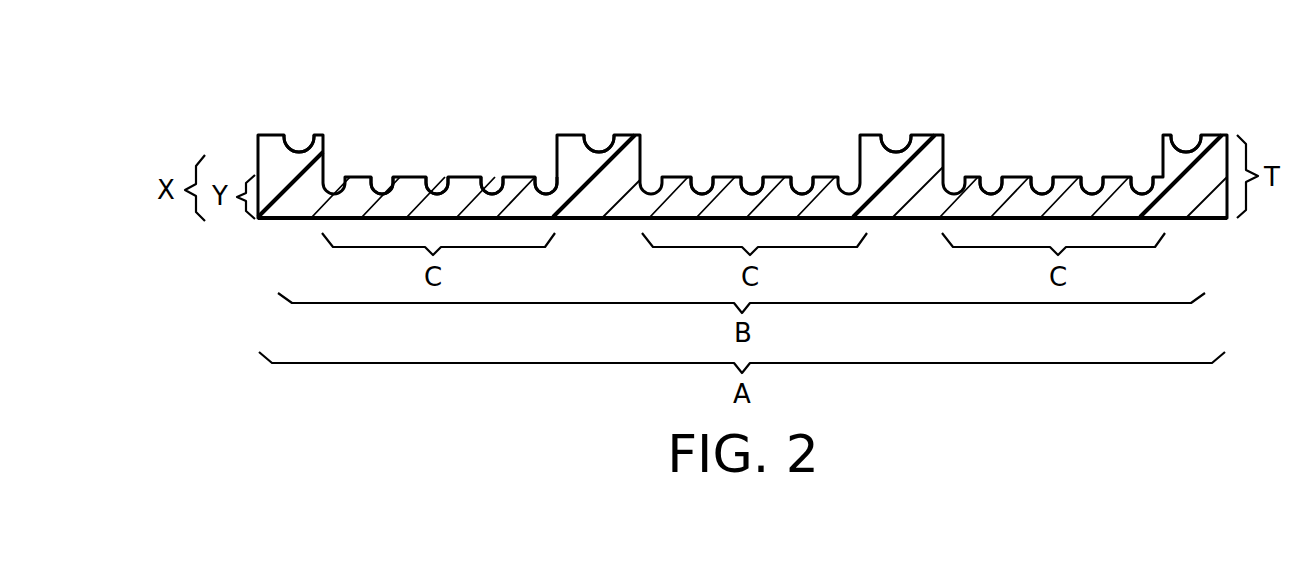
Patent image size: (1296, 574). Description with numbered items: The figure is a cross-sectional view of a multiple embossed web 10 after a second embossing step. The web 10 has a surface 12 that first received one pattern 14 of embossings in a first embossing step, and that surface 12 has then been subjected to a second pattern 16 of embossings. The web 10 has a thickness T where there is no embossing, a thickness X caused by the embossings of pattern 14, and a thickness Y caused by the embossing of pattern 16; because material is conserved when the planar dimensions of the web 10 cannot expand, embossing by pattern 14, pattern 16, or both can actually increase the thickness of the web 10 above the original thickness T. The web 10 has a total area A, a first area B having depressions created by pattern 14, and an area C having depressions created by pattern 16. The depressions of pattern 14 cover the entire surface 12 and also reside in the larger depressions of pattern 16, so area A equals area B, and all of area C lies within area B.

The web 10 is at (1100, 55).
The surface 12 is at (575, 132).
The pattern of embossings 14 is at (297, 153).
The second pattern of embossings 16 is at (437, 195).